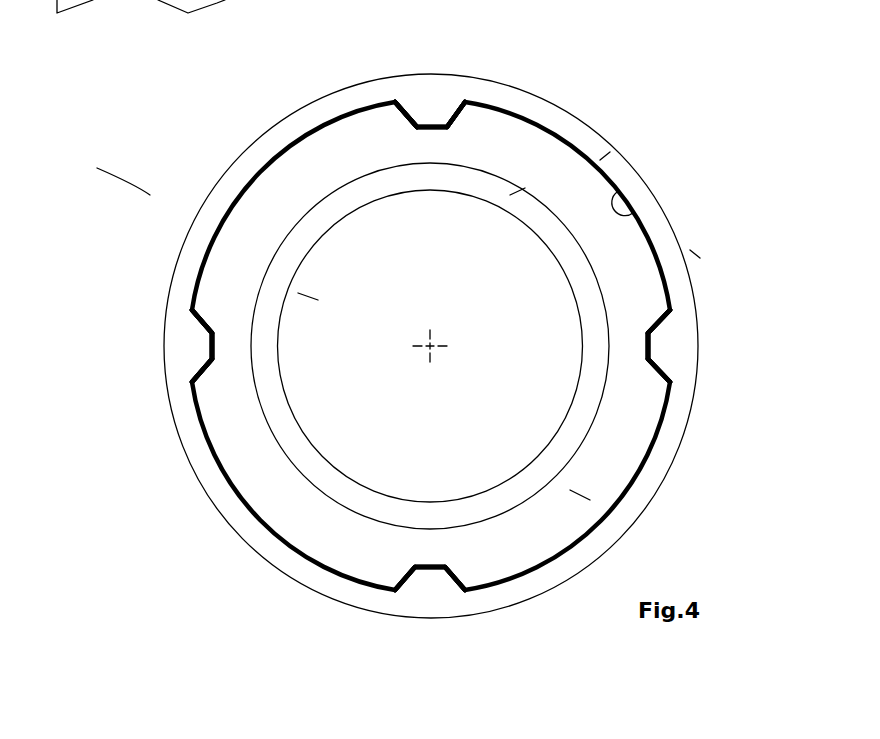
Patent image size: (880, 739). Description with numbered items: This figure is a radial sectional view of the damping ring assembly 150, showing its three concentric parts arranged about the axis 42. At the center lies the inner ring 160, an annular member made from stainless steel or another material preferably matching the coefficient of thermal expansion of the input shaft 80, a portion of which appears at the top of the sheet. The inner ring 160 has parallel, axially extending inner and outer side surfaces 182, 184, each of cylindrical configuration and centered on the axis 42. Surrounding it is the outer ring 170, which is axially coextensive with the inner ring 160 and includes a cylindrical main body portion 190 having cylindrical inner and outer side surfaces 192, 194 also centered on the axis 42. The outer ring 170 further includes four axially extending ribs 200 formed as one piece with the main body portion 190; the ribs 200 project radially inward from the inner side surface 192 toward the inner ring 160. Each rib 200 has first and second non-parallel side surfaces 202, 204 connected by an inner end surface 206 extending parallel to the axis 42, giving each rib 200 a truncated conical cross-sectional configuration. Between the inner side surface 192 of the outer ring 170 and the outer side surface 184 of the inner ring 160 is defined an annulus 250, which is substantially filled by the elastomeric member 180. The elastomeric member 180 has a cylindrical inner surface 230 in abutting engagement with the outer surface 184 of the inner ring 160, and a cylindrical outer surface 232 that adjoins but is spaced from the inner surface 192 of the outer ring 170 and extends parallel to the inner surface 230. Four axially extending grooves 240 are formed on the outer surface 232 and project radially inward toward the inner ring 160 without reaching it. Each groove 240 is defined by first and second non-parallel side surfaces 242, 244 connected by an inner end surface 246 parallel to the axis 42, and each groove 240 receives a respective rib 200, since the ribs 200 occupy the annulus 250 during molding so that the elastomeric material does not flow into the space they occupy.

The axis 42 is at (432, 348).
The input shaft 80 is at (157, 6).
The damping ring assembly 150 is at (102, 177).
The inner ring 160 is at (324, 300).
The outer ring 170 is at (242, 137).
The elastomeric member 180 is at (206, 470).
The inner side surface 182 is at (297, 256).
The outer side surface 184 is at (293, 241).
The main body portion 190 is at (605, 157).
The inner side surface 192 is at (617, 190).
The outer side surface 194 is at (700, 258).
The rib 200 is at (428, 132).
The first side surface 202 is at (652, 322).
The second side surface 204 is at (452, 125).
The inner end surface 206 is at (215, 337).
The inner surface 230 is at (517, 192).
The outer surface 232 is at (562, 140).
The groove 240 is at (430, 88).
The first side surface 242 is at (401, 108).
The second side surface 244 is at (457, 117).
The inner end surface 246 is at (412, 104).
The annulus 250 is at (580, 495).